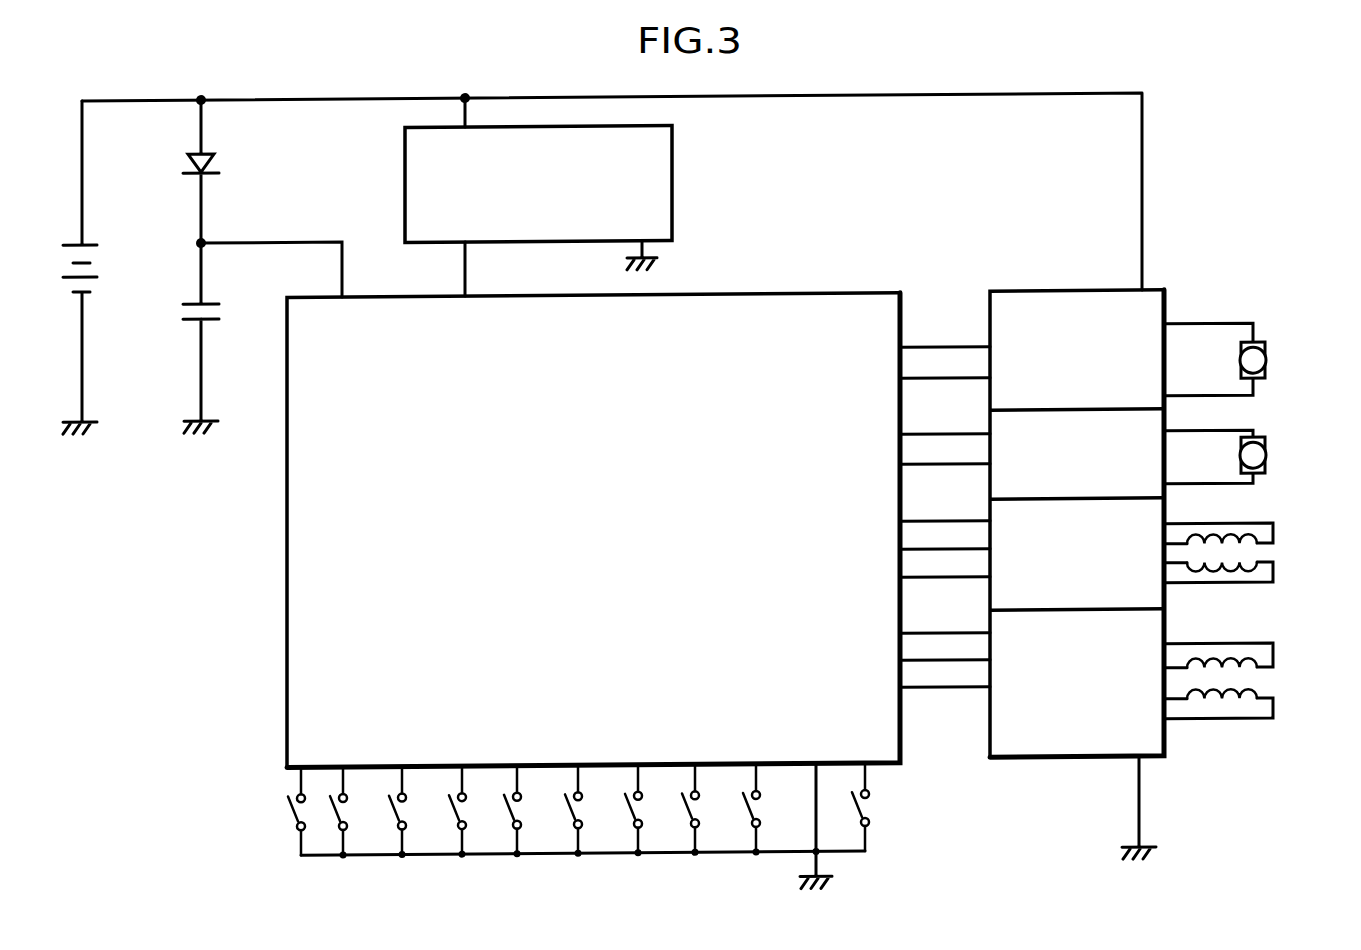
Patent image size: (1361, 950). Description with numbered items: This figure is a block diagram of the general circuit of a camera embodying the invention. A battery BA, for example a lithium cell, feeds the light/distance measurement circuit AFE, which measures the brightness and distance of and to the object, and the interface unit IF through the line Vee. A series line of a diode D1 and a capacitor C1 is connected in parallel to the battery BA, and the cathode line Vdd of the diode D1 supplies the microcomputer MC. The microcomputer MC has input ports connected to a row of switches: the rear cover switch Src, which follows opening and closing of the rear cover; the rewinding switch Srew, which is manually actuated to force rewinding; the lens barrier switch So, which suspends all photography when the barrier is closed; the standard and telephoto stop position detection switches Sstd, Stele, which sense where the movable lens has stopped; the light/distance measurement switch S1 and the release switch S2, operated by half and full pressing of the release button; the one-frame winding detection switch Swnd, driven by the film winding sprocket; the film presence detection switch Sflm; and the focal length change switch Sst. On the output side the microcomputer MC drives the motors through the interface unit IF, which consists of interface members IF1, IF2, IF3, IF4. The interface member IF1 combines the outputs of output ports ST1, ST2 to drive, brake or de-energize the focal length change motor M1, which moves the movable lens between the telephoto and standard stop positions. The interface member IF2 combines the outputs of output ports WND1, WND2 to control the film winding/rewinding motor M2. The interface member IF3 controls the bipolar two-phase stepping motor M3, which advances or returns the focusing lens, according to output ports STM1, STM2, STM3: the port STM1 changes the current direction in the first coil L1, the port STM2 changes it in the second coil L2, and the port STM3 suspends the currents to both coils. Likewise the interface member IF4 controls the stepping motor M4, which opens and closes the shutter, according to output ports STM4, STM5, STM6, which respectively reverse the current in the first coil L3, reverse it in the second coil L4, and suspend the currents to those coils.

The line Vee is at (612, 176).
The cathode line Vdd is at (270, 251).
The battery BA is at (103, 268).
The diode D1 is at (224, 172).
The capacitor C1 is at (218, 338).
The light/distance measurement circuit AFE is at (672, 192).
The microcomputer MC is at (286, 531).
The interface unit IF is at (1077, 556).
The interface member IF1 is at (1063, 354).
The interface member IF2 is at (1063, 454).
The interface member IF3 is at (1063, 556).
The interface member IF4 is at (1063, 681).
The output port ST1 is at (906, 350).
The output port ST2 is at (906, 377).
The output port WND1 is at (905, 435).
The output port WND2 is at (905, 465).
The output port STM1 is at (906, 521).
The output port STM2 is at (906, 549).
The output port STM3 is at (906, 577).
The output port STM4 is at (906, 634).
The output port STM5 is at (906, 660).
The output port STM6 is at (906, 687).
The focal length change motor M1 is at (1266, 369).
The film winding/rewinding motor M2 is at (1266, 464).
The stepping motor M3 is at (1256, 552).
The stepping motor M4 is at (1256, 702).
The first coil L1 is at (1227, 552).
The second coil L2 is at (1228, 578).
The first coil L3 is at (1237, 676).
The second coil L4 is at (1232, 710).
The film presence detection switch Sflm is at (252, 811).
The rear cover switch Src is at (338, 793).
The rewinding switch Srew is at (405, 792).
The lens barrier switch So is at (462, 792).
The standard stop position detection switch Sstd is at (518, 791).
The telephoto stop position detection switch Stele is at (587, 792).
The light/distance measurement switch S1 is at (644, 791).
The release switch S2 is at (696, 790).
The one-frame winding detection switch Swnd is at (768, 791).
The focal length change switch Sst is at (889, 807).